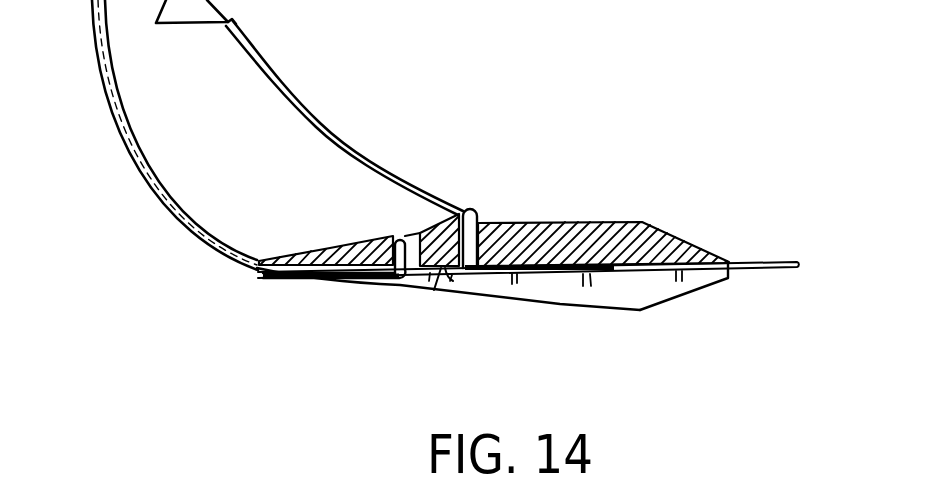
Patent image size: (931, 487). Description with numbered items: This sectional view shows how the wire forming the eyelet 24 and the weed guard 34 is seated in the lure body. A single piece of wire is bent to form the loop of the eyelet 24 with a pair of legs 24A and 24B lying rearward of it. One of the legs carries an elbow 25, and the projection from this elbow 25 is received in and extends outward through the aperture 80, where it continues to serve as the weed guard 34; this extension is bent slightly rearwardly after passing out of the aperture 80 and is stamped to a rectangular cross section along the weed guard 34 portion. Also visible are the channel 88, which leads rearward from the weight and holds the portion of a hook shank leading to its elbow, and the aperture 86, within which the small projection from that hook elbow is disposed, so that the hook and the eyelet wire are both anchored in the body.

The eyelet 24 is at (782, 270).
The leg of the loop 24A is at (553, 272).
The leg of the loop 24B is at (612, 268).
The elbow 25 is at (460, 268).
The weed guard 34 is at (284, 88).
The aperture 80 is at (478, 212).
The aperture 86 is at (395, 241).
The channel 88 is at (408, 291).